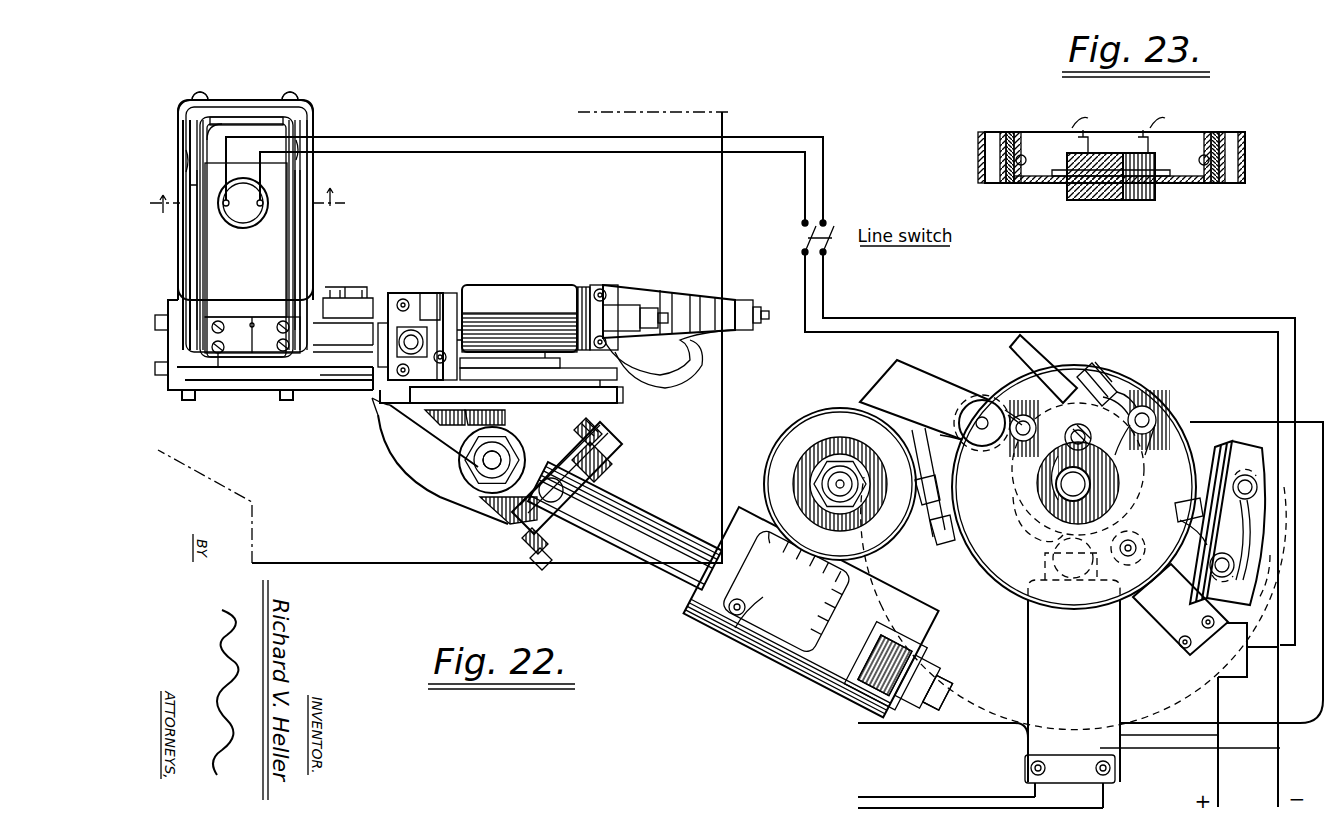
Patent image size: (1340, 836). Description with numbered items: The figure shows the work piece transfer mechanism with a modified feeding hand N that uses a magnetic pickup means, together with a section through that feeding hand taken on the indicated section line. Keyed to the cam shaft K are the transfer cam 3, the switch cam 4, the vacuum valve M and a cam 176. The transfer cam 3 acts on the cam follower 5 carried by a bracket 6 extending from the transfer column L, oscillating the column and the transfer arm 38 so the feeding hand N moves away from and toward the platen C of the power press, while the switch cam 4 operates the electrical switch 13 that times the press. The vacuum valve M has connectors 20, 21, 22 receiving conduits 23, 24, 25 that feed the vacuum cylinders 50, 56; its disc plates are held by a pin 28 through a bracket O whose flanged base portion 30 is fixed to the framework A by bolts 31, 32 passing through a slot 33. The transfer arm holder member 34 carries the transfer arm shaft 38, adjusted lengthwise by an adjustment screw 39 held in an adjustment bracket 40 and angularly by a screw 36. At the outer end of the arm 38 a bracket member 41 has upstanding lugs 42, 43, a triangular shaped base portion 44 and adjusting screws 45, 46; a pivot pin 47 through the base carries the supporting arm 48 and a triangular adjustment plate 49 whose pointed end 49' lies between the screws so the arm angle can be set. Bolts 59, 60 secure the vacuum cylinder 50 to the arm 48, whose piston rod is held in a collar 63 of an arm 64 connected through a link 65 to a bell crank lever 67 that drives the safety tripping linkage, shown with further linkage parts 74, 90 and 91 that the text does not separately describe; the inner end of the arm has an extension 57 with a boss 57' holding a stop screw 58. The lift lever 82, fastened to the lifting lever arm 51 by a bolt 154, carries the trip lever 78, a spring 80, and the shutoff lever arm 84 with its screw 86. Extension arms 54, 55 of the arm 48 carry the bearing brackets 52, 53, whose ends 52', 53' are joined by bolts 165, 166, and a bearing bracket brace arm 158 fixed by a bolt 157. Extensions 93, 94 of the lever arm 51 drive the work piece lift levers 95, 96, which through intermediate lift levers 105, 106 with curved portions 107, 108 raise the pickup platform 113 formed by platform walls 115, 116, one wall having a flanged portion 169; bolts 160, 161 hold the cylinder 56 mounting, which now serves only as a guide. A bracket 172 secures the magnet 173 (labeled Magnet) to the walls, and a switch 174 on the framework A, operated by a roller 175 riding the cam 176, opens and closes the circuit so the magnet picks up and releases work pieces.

In FIG. 22, the transfer cam 3 is at (1222, 445).
In FIG. 22, the switch cam 4 is at (1120, 482).
In FIG. 22, the cam follower 5 is at (988, 400).
In FIG. 22, the bracket 6 is at (915, 378).
In FIG. 22, the electrical switch 13 is at (1103, 710).
In FIG. 22, the connector 20 is at (1025, 415).
In FIG. 22, the connector 21 is at (1066, 492).
In FIG. 22, the connector 22 is at (1156, 415).
In FIG. 22, the conduit 23 is at (1012, 445).
In FIG. 22, the conduit 24 is at (1091, 438).
In FIG. 22, the conduit 25 is at (1118, 390).
In FIG. 22, the pin 28 is at (1195, 533).
In FIG. 22, the flanged base portion 30 is at (1262, 567).
In FIG. 22, the bolt 31 is at (1230, 575).
In FIG. 22, the bolt 32 is at (1246, 475).
In FIG. 22, the slot 33 is at (1252, 525).
In FIG. 22, the transfer arm holder member 34 is at (690, 620).
In FIG. 22, the screw 36 is at (748, 622).
In FIG. 22, the transfer arm shaft 38 is at (624, 575).
In FIG. 22, the adjustment screw 39 is at (848, 700).
In FIG. 22, the adjustment bracket 40 is at (885, 710).
In FIG. 22, the bracket member 41 is at (535, 415).
In FIG. 22, the upstanding lug 42 is at (605, 455).
In FIG. 22, the upstanding lug 43 is at (517, 525).
In FIG. 22, the triangular shaped base portion 44 is at (483, 505).
In FIG. 22, the adjusting screw 45 is at (535, 560).
In FIG. 22, the adjusting screw 46 is at (598, 428).
In FIG. 22, the pivot pin 47 is at (478, 462).
In FIG. 22, the supporting arm 48 is at (410, 435).
In FIG. 22, the triangular shaped adjustment plate 49 is at (509, 470).
In FIG. 22, the pointed end 49' is at (602, 479).
In FIG. 22, the vacuum cylinder 50 is at (525, 285).
In FIG. 22, the lifting lever arm 51 is at (320, 380).
In FIG. 22, the bearing bracket 52 is at (278, 229).
In FIG. 23, the bearing bracket 52 is at (1273, 146).
In FIG. 22, the bearing bracket end 52' is at (280, 73).
In FIG. 22, the bearing bracket 53 is at (264, 223).
In FIG. 23, the bearing bracket 53 is at (1092, 139).
In FIG. 22, the bearing bracket end 53' is at (217, 75).
In FIG. 22, the extension arm 54 is at (330, 383).
In FIG. 22, the extension arm 55 is at (348, 300).
In FIG. 22, the vacuum cylinder 56 is at (396, 296).
In FIG. 22, the extension 57 is at (669, 293).
In FIG. 22, the boss 57' is at (746, 288).
In FIG. 22, the stop screw 58 is at (765, 311).
In FIG. 22, the bolt 59 is at (602, 289).
In FIG. 22, the bolt 60 is at (648, 372).
In FIG. 22, the collar 63 is at (645, 308).
In FIG. 22, the arm 64 is at (640, 358).
In FIG. 22, the link 65 is at (530, 367).
In FIG. 22, the bell crank lever 67 is at (510, 383).
In FIG. 22, the link 74 is at (480, 357).
In FIG. 22, the trip lever 78 is at (478, 414).
In FIG. 22, the spring 80 is at (450, 293).
In FIG. 22, the lift lever 82 is at (398, 343).
In FIG. 22, the arm 84 is at (445, 413).
In FIG. 22, the screw 86 is at (465, 335).
In FIG. 22, the base bar 90 is at (378, 400).
In FIG. 22, the screw 91 is at (458, 297).
In FIG. 22, the extension 93 is at (222, 370).
In FIG. 22, the extension 94 is at (345, 333).
In FIG. 22, the work piece lift lever 95 is at (197, 262).
In FIG. 23, the work piece lift lever 95 is at (1003, 132).
In FIG. 22, the work piece lift lever 96 is at (303, 240).
In FIG. 23, the work piece lift lever 96 is at (1224, 135).
In FIG. 22, the intermediate lift lever 105 is at (193, 252).
In FIG. 23, the intermediate lift lever 105 is at (1010, 132).
In FIG. 22, the intermediate lift lever 106 is at (298, 270).
In FIG. 23, the intermediate lift lever 106 is at (1218, 135).
In FIG. 22, the curved portion 107 is at (302, 158).
In FIG. 22, the curved portion 108 is at (188, 172).
In FIG. 22, the pickup platform 113 is at (243, 117).
In FIG. 22, the platform wall 115 is at (293, 124).
In FIG. 23, the platform wall 115 is at (1210, 132).
In FIG. 22, the platform wall 116 is at (212, 150).
In FIG. 23, the platform wall 116 is at (1018, 132).
In FIG. 22, the bolt 154 is at (430, 295).
In FIG. 22, the bolt 157 is at (156, 378).
In FIG. 22, the bearing bracket brace arm 158 is at (245, 392).
In FIG. 22, the bolt 160 is at (220, 325).
In FIG. 22, the bolt 161 is at (228, 367).
In FIG. 22, the bolt 165 is at (200, 96).
In FIG. 22, the bolt 166 is at (292, 96).
In FIG. 22, the flanged portion 169 is at (280, 322).
In FIG. 22, the bracket 172 is at (238, 175).
In FIG. 23, the bracket 172 is at (1045, 184).
In FIG. 22, the magnet 173 is at (243, 230).
In FIG. 23, the magnet 173 is at (1095, 200).
In FIG. 22, the switch 174 is at (1170, 635).
In FIG. 22, the roller 175 is at (1086, 569).
In FIG. 22, the cam 176 is at (1177, 504).
In FIG. 22, the framework A is at (1242, 666).
In FIG. 22, the platen C is at (714, 184).
In FIG. 22, the cam shaft K is at (1085, 484).
In FIG. 22, the transfer column L is at (786, 421).
In FIG. 22, the vacuum valve M is at (1160, 374).
In FIG. 22, the feeding hand mechanism N is at (340, 123).
In FIG. 22, the bracket O is at (1265, 512).
In FIG. 22, the magnet Magnet is at (262, 220).
In FIG. 23, the magnet Magnet is at (1150, 200).